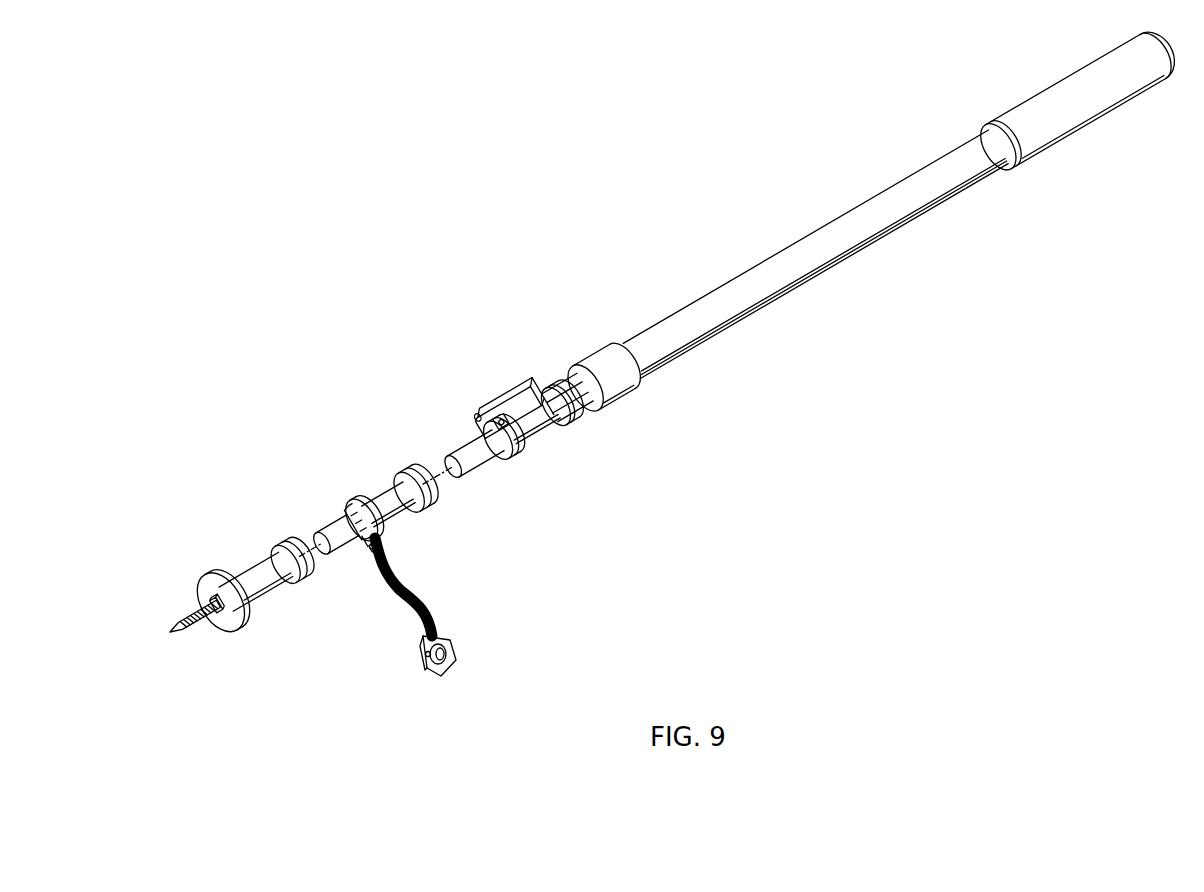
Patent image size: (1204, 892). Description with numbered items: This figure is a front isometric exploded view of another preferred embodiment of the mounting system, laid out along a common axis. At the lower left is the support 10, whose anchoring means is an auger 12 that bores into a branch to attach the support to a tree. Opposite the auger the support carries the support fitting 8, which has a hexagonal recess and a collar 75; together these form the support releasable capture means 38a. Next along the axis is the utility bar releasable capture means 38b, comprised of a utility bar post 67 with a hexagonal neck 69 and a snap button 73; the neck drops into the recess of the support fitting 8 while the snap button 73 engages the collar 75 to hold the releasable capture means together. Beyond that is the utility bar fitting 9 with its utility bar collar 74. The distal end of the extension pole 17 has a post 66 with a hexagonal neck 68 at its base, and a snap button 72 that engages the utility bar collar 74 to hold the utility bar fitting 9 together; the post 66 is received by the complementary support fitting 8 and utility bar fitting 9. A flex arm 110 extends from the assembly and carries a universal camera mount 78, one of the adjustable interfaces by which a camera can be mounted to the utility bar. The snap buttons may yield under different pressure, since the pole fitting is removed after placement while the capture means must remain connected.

The support fitting 8 is at (286, 533).
The utility bar fitting 9 is at (418, 460).
The support 10 is at (214, 578).
The auger 12 is at (193, 632).
The extension pole 17 is at (765, 277).
The support releasable capture means 38a is at (306, 610).
The utility bar releasable capture means 38b is at (356, 468).
The post 66 is at (468, 456).
The utility bar post 67 is at (338, 533).
The hexagonal neck 68 is at (507, 461).
The hexagonal neck 69 is at (357, 502).
The snap button 72 is at (493, 416).
The snap button 73 is at (361, 548).
The utility bar collar 74 is at (407, 470).
The collar 75 is at (283, 562).
The universal camera mount 78 is at (452, 661).
The flex arm 110 is at (430, 604).